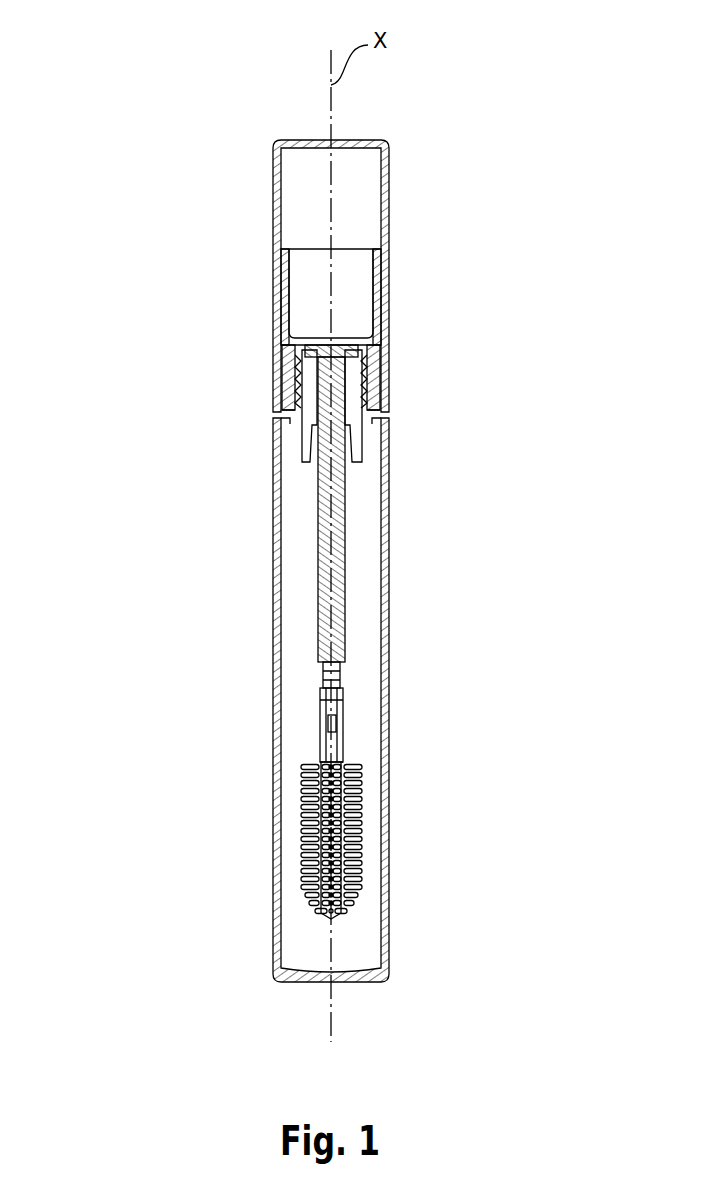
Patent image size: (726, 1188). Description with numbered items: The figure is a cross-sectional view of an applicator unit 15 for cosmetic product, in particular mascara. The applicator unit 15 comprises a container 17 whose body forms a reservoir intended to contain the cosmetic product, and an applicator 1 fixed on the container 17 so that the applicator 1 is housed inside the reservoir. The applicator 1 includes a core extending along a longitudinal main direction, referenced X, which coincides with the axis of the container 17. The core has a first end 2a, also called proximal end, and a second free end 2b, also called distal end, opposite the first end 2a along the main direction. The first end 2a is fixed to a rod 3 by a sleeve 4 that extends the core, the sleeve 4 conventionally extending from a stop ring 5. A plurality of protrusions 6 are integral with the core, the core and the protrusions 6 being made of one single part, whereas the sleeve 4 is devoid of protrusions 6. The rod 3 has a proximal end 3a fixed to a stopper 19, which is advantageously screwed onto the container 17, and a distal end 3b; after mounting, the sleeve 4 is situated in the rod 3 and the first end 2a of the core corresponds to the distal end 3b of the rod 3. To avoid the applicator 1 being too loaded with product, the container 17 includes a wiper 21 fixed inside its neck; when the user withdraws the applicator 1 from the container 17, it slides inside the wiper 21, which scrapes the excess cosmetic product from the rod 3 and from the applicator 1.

The applicator 1 is at (331, 838).
The first end of the core 2a is at (318, 760).
The second free end of the core 2b is at (328, 922).
The rod 3 is at (317, 503).
The proximal end of the rod 3a is at (325, 372).
The distal end of the rod 3b is at (321, 725).
The sleeve 4 is at (318, 708).
The stop ring 5 is at (343, 755).
The protrusions 6 is at (300, 830).
The applicator unit 15 is at (160, 467).
The container 17 is at (389, 652).
The stopper 19 is at (385, 272).
The wiper 21 is at (362, 447).